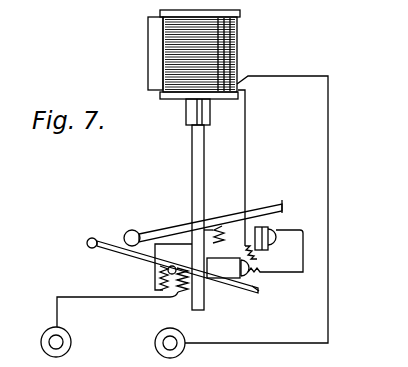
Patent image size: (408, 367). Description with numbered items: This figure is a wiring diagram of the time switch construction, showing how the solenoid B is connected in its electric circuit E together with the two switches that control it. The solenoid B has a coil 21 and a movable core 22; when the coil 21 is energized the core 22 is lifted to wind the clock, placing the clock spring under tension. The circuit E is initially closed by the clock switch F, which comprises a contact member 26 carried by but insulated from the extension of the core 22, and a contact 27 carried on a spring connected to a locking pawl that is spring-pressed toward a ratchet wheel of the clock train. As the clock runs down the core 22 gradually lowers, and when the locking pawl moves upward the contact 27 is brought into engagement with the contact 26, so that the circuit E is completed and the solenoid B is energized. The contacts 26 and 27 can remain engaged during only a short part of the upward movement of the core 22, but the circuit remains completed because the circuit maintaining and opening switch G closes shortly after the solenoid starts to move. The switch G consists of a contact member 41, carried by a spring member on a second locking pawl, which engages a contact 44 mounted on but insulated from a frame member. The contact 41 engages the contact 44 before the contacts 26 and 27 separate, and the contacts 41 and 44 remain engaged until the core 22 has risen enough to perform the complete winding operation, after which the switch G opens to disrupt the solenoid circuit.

The coil 21 is at (163, 50).
The solenoid B is at (237, 44).
The electric circuit E is at (247, 157).
The core 22 is at (196, 158).
The circuit maintaining and opening switch G is at (272, 195).
The contact member 41 is at (276, 208).
The contact 44 is at (273, 248).
The contact member 26 is at (240, 268).
The clock switch F is at (234, 291).
The contact 27 is at (252, 294).